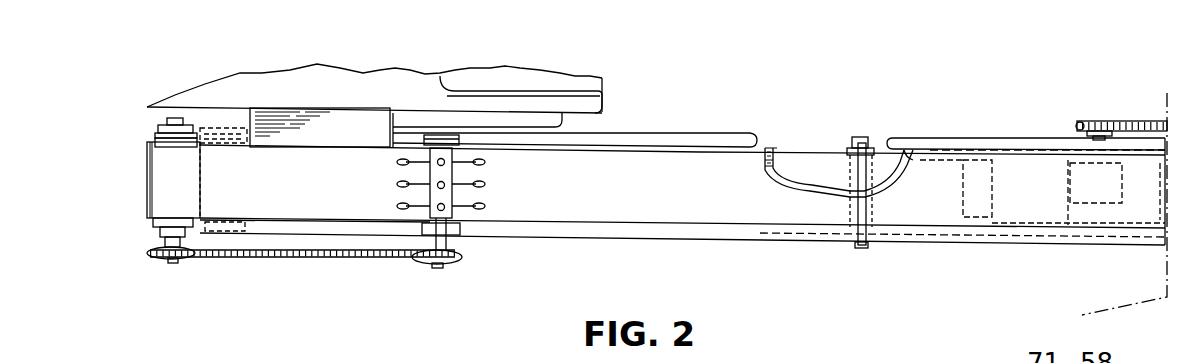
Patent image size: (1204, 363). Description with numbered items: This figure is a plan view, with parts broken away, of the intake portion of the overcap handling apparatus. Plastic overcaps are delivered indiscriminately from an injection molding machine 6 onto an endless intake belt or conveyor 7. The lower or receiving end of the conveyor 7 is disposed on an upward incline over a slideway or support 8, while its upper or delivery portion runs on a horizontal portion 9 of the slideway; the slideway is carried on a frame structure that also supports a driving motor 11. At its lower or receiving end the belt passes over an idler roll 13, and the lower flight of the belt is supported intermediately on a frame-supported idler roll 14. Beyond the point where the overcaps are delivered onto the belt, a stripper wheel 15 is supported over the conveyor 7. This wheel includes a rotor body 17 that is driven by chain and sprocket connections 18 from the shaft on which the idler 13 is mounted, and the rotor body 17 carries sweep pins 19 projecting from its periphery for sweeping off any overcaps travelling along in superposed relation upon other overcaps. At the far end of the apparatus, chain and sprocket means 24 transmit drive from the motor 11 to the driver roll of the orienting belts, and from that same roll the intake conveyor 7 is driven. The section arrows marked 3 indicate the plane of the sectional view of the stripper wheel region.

The section line 3- 3 is at (131, 217).
The injection molding machine 6 is at (249, 96).
The intake belt or conveyor 7 is at (277, 204).
The slideway or support 8 is at (790, 180).
The horizontal portion of the slideway 9 is at (913, 162).
The driving motor 11 is at (1011, 212).
The idler roll 13 is at (189, 182).
The idler roll 14 is at (843, 205).
The stripper wheel 15 is at (480, 173).
The rotor body 17 is at (452, 212).
The chain and sprocket connections 18 is at (374, 257).
The sweep pins 19 is at (397, 164).
The chain and sprocket means 24 is at (1134, 123).